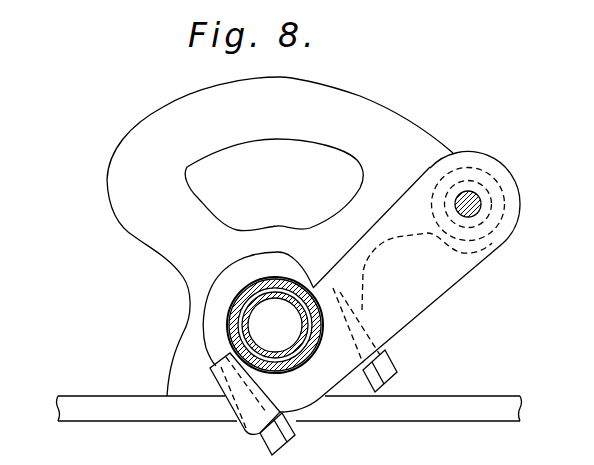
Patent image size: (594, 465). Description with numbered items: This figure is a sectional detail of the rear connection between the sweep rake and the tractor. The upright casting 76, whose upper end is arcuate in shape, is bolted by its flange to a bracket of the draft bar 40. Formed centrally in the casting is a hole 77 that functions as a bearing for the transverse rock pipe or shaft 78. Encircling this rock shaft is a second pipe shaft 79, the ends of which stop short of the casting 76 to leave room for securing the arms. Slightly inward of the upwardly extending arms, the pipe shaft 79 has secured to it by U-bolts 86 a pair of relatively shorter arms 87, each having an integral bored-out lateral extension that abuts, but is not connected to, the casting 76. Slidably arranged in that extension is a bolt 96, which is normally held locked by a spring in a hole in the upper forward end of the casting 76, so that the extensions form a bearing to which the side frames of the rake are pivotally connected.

The draft bar 40 is at (449, 397).
The upright casting 76 is at (161, 108).
The U-bolt 86 is at (226, 273).
The arm 87 is at (427, 308).
The bolt 96 is at (480, 201).
The second pipe shaft 79 is at (228, 349).
The transverse rock pipe or shaft 78 is at (228, 312).
The hole 77 is at (227, 330).